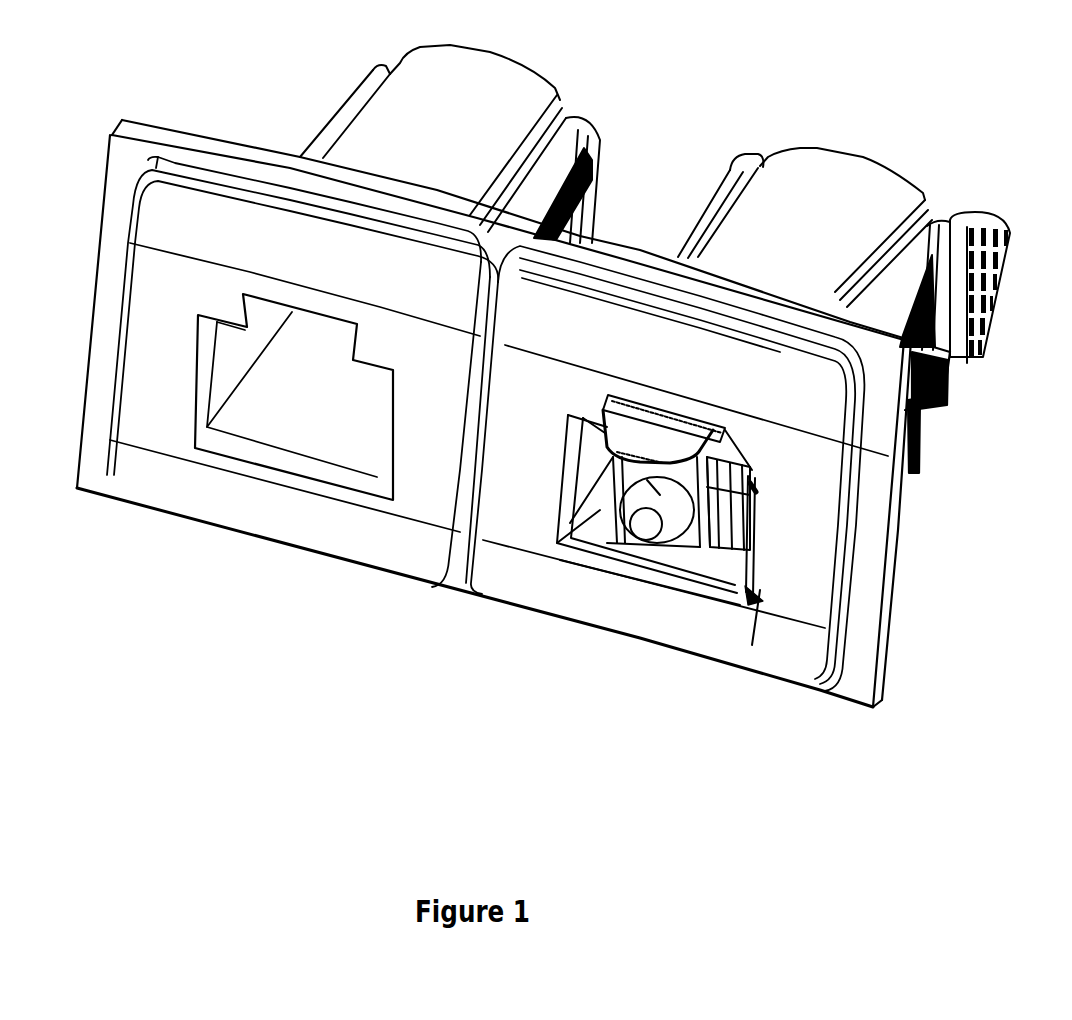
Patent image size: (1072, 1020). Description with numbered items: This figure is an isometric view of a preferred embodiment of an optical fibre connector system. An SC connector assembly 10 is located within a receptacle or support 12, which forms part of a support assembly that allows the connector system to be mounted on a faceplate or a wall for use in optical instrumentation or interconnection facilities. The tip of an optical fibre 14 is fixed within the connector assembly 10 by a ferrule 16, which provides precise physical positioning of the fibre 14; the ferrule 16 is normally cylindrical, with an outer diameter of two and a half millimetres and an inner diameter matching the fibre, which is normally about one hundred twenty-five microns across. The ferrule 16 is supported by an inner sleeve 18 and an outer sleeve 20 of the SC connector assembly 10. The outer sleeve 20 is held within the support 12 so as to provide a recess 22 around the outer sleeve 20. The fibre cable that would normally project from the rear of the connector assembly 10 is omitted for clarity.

The SC connector assembly 10 is at (627, 600).
The support 12 is at (840, 178).
The optical fibre 14 is at (605, 553).
The ferrule 16 is at (716, 595).
The inner sleeve 18 is at (700, 492).
The outer sleeve 20 is at (750, 480).
The recess 22 is at (760, 600).